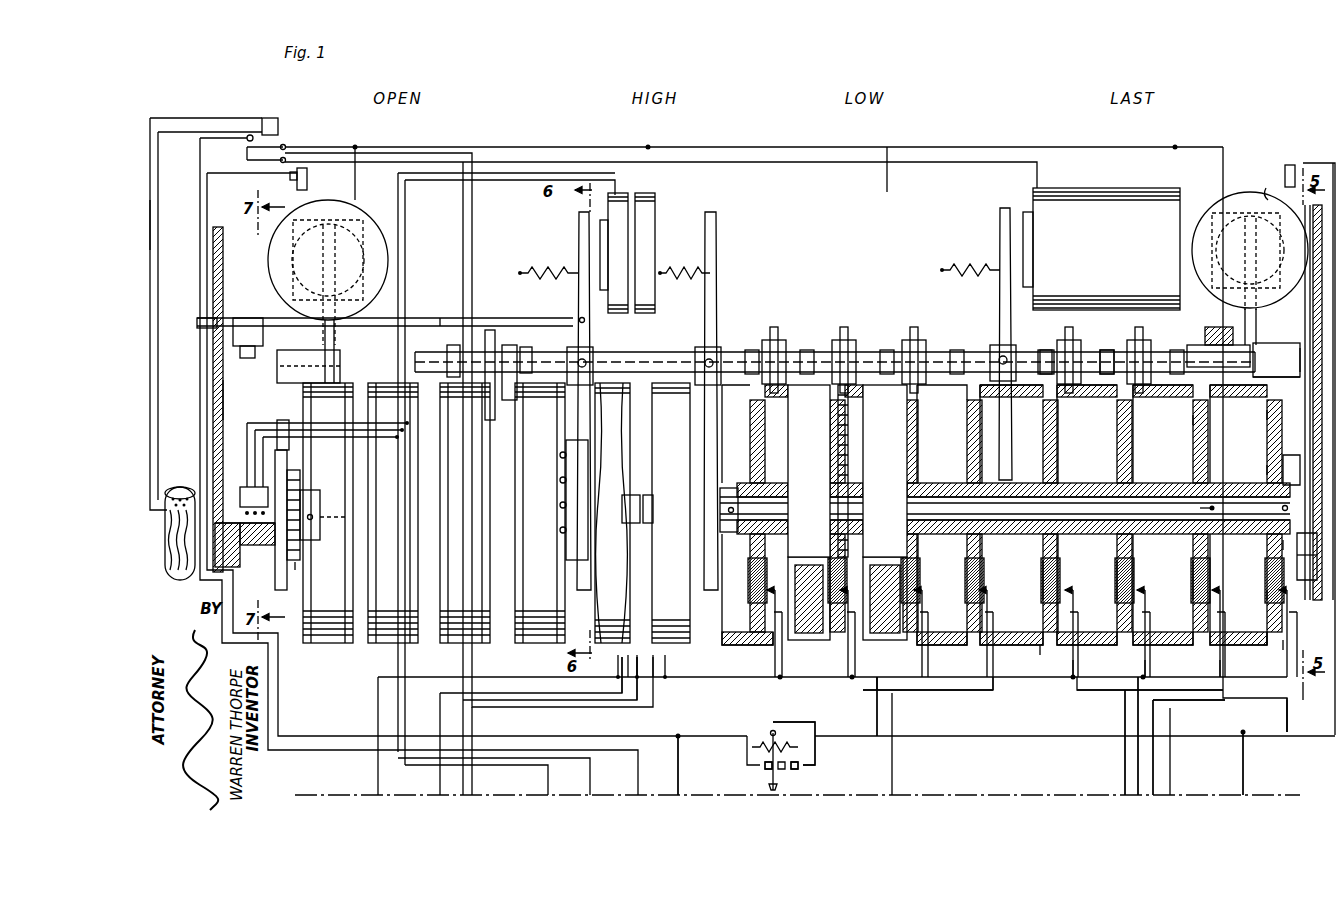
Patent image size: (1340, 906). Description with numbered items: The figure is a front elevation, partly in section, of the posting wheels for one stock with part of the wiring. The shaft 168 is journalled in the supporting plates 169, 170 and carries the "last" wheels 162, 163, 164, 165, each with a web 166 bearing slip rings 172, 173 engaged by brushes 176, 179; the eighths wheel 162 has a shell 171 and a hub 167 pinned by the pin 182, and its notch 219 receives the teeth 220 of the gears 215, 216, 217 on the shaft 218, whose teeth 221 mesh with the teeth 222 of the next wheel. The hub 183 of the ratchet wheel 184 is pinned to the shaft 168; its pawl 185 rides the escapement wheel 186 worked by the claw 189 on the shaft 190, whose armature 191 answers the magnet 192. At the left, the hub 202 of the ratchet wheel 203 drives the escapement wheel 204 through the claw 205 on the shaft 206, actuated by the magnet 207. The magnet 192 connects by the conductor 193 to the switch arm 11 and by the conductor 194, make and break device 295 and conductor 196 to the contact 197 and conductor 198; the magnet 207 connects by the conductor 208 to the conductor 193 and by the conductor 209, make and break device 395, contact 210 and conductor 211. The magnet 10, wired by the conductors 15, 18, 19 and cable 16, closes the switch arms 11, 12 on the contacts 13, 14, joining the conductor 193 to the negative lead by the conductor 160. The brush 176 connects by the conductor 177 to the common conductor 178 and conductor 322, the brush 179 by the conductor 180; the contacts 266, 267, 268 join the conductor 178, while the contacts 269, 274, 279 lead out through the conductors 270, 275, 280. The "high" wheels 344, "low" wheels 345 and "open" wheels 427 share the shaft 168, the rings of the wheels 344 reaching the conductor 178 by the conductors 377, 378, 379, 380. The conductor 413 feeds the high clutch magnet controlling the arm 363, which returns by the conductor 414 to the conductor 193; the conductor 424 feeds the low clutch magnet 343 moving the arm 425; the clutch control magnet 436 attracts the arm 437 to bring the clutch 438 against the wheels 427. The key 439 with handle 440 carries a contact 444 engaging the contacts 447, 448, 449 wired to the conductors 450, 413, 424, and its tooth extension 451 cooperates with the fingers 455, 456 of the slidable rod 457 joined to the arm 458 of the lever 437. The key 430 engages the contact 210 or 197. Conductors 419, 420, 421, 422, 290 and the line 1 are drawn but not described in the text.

The conductor 18 is at (194, 118).
The contact 13 is at (250, 135).
The magnet 10 is at (270, 117).
The switch arm 11 is at (284, 144).
The switch arm 12 is at (285, 158).
The contact 14 is at (247, 148).
The make and break device 395 is at (305, 168).
The conductor 193 is at (377, 146).
The conductor 322 is at (434, 153).
The conductor 19 is at (158, 172).
The conductor 15 is at (152, 208).
The conductor 209 is at (245, 173).
The magnet 207 is at (330, 200).
The conductor 208 is at (356, 188).
The supporting plate 170 is at (213, 250).
The conductor 413 is at (399, 247).
The conductor 450 is at (406, 279).
The slidable rod 457 is at (431, 318).
The gear 421 is at (488, 330).
The arm 458 is at (578, 300).
The open quotation wheels 427 is at (513, 345).
The arm 437 is at (580, 241).
The clutch control magnet 436 is at (656, 218).
The arm 363 is at (705, 324).
The high quotation wheels 344 is at (671, 382).
The conductor 414 is at (888, 177).
The conductor 424 is at (742, 451).
The arm 425 is at (1000, 254).
The low quotation wheels 345 is at (840, 347).
The shaft 218 is at (957, 350).
The low clutch magnet 343 is at (1101, 249).
The teeth 221 is at (1200, 327).
The gear 217 is at (1068, 335).
The gear 216 is at (1135, 335).
The wheel 165 is at (1040, 350).
The wheel 164 is at (1107, 350).
The wheel 163 is at (1190, 345).
The magnet 192 is at (1218, 212).
The armature 191 is at (1243, 213).
The conductor 194 is at (1268, 200).
The gear 215 is at (1212, 323).
The supporting plate 169 is at (1313, 244).
The teeth 220 is at (1250, 315).
The wheel 162 is at (1258, 343).
The bifurcated claw 189 is at (1300, 350).
The pawl 185 is at (1276, 377).
The shaft 190 is at (1317, 328).
The make and break device 295 is at (1290, 160).
The conductor 196 is at (1310, 162).
The tooth extension 451 is at (250, 318).
The finger 455 is at (258, 332).
The finger 456 is at (233, 337).
The shaft 206 is at (276, 352).
The key 439 is at (230, 395).
The claw 205 is at (298, 424).
The contact 448 is at (242, 490).
The contact 447 is at (246, 512).
The cable 16 is at (224, 520).
The contact 444 is at (287, 442).
The contact 449 is at (300, 481).
The arm 440 is at (245, 545).
The hub 202 is at (318, 540).
The ratchet wheel 203 is at (296, 567).
The escapement wheel 204 is at (287, 590).
The shaft 168 is at (182, 545).
The clutch 438 is at (567, 560).
The teeth 222 is at (422, 644).
The web 166 is at (1058, 430).
The notch 219 is at (1193, 420).
The slip ring 172 is at (1267, 415).
The slip ring 173 is at (1270, 470).
The pin 182 is at (1210, 508).
The hub 183 is at (1270, 504).
The contact 279 is at (1044, 583).
The contact 274 is at (1110, 583).
The contact 269 is at (1190, 578).
The hub 167 is at (1283, 545).
The ratchet wheel 184 is at (1297, 560).
The escapement wheel 186 is at (1270, 590).
The conductor 290 is at (1040, 650).
The contact 268 is at (1073, 660).
The contact 267 is at (1145, 655).
The contact 266 is at (1220, 660).
The cylindrical shell 171 is at (1260, 645).
The brush 176 is at (1283, 645).
The common conductor 178 is at (698, 687).
The conductor 177 is at (1287, 680).
The brush 179 is at (1303, 678).
The conductor 180 is at (1290, 725).
The conductor 270 is at (1214, 700).
The conductor 198 is at (1244, 761).
The conductor 275 is at (1125, 747).
The conductor 280 is at (1138, 765).
The conductor 379 is at (652, 660).
The conductor 380 is at (700, 677).
The conductor 377 is at (622, 680).
The conductor 378 is at (637, 690).
The key 430 is at (770, 733).
The conductor 419 is at (820, 695).
The conductor 211 is at (680, 757).
The contact 210 is at (765, 768).
The contact 197 is at (798, 766).
The conductor 420 is at (878, 700).
The conductor 422 is at (966, 690).
The conductor 160 is at (378, 770).
The ground line 1 is at (795, 795).